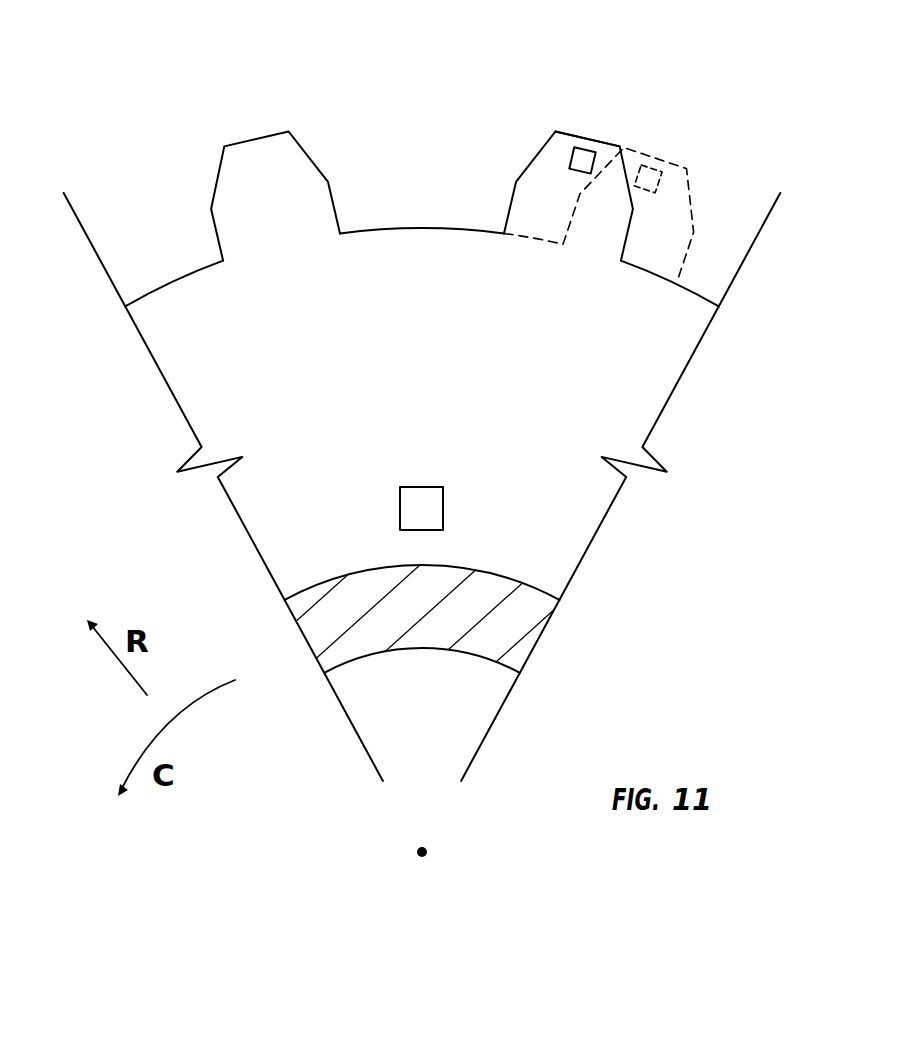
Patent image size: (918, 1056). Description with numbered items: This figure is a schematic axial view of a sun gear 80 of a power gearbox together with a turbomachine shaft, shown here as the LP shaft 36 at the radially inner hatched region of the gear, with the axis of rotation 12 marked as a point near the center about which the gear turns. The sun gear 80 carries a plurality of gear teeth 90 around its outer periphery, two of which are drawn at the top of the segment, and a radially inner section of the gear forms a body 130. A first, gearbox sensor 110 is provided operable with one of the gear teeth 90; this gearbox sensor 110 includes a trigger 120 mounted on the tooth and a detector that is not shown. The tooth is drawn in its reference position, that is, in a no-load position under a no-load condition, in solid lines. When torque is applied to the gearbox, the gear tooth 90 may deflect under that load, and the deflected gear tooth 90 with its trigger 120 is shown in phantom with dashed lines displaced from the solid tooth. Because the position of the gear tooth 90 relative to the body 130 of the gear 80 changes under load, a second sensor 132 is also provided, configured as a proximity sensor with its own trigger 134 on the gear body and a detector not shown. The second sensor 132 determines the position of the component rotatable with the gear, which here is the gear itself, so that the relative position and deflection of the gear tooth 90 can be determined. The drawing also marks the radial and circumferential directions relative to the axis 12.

The sun gear 80 is at (158, 55).
The body 130 is at (217, 388).
The gear teeth 90 is at (534, 155).
The gearbox sensor 110 is at (556, 124).
The trigger 120 is at (588, 149).
The second sensor 132 is at (463, 453).
The trigger 134 is at (443, 508).
The LP shaft 36 is at (538, 588).
The rotational axis 12 is at (427, 855).